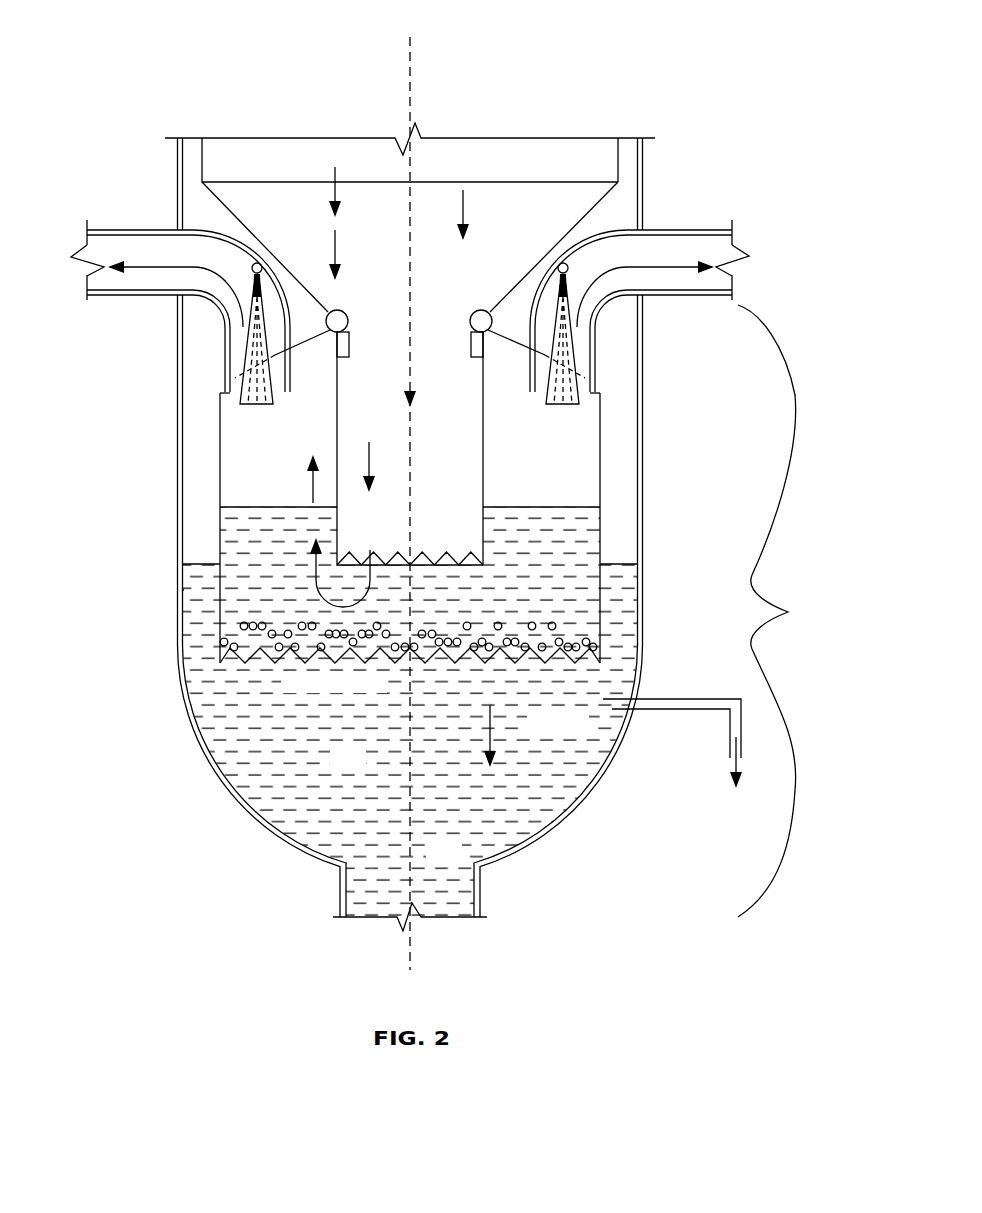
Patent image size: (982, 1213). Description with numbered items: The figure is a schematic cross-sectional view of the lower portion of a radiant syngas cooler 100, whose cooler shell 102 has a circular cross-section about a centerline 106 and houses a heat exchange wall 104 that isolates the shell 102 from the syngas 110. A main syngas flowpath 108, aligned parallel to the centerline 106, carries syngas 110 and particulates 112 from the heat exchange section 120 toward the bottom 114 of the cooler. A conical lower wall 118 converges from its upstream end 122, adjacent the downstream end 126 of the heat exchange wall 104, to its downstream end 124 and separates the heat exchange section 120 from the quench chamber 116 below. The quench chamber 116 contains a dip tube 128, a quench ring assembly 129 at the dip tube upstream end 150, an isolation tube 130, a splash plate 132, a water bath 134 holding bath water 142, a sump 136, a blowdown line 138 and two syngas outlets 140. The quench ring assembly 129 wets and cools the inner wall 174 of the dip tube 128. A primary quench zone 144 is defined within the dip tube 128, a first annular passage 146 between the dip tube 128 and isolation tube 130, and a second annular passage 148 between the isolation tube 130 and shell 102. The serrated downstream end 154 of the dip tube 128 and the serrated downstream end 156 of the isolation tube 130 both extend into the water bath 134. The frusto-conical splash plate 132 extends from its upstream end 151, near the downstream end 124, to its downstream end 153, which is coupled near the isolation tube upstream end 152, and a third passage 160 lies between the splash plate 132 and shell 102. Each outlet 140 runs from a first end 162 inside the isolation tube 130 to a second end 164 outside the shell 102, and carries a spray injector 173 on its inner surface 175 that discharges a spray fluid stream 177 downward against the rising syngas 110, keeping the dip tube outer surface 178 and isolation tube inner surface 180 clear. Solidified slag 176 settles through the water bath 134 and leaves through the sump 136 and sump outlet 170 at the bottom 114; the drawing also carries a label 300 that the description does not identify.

The syngas cooler 100 is at (158, 48).
The cooler shell 102 is at (645, 190).
The heat exchange wall 104 is at (617, 167).
The centerline 106 is at (411, 73).
The main syngas flowpath 108 is at (337, 192).
The syngas 110 is at (337, 242).
The particulates 112 is at (466, 212).
The bottom 114 is at (556, 836).
The quench chamber 116 is at (779, 611).
The lower wall 118 is at (635, 218).
The heat exchange section 120 is at (288, 211).
The upstream end 122 is at (643, 218).
The downstream end 124 is at (479, 309).
The downstream end 126 is at (640, 146).
The dip tube 128 is at (481, 386).
The quench ring assembly 129 is at (350, 342).
The isolation tube 130 is at (599, 472).
The splash plate 132 is at (505, 315).
The water bath 134 is at (214, 729).
The sump 136 is at (459, 859).
The blowdown line 138 is at (710, 698).
The syngas outlet 140 is at (127, 224).
The bath water 142 is at (363, 769).
The primary quench zone 144 is at (459, 421).
The first annular passage 146 is at (167, 508).
The second annular passage 148 is at (195, 538).
The upstream end 150 is at (484, 392).
The upstream end 151 is at (308, 326).
The upstream end 152 is at (220, 413).
The downstream end 153 is at (226, 390).
The downstream end 154 is at (367, 550).
The downstream end 156 is at (220, 652).
The third passage 160 is at (209, 216).
The first end 162 is at (290, 366).
The second end 164 is at (103, 295).
The sump outlet 170 is at (340, 890).
The spray injector 173 is at (243, 263).
The inner wall 174 is at (481, 453).
The inner surface 175 is at (656, 236).
The solidified slag 176 is at (500, 725).
The spray fluid stream 177 is at (280, 287).
The outer surface 178 is at (485, 425).
The inner surface 180 is at (222, 422).
The bubbles 300 is at (608, 640).